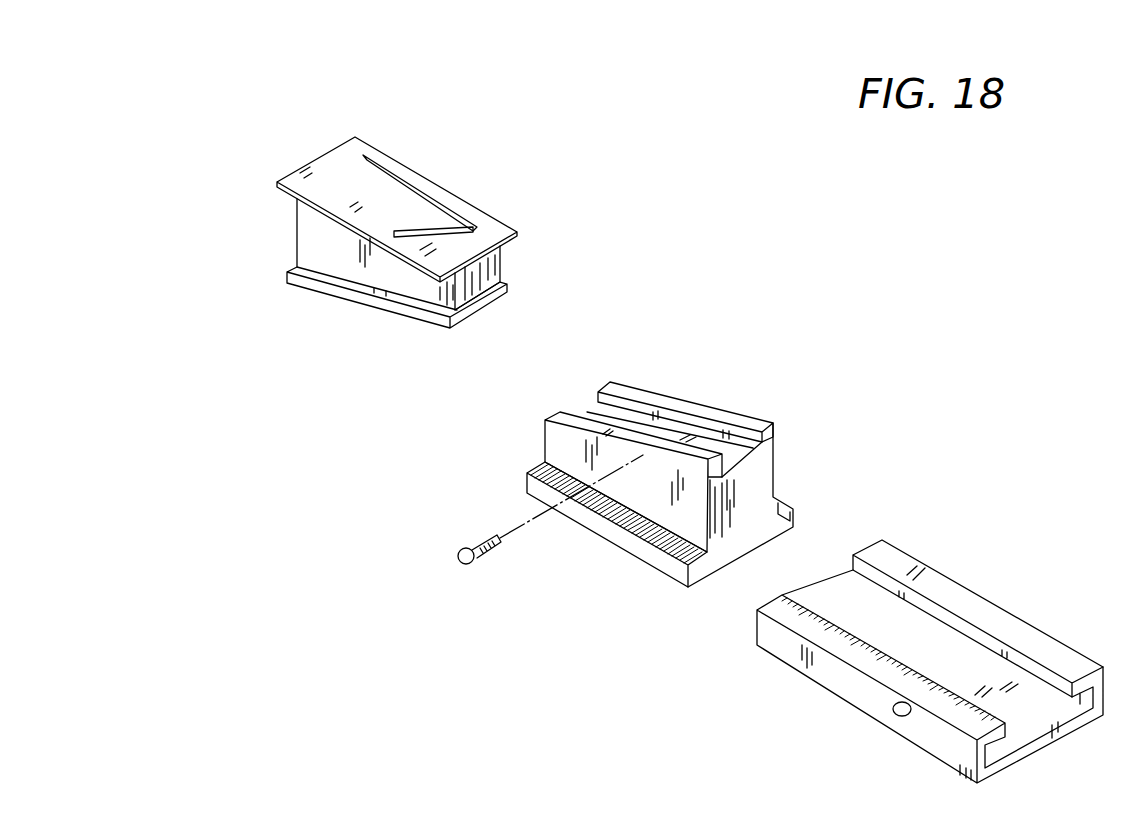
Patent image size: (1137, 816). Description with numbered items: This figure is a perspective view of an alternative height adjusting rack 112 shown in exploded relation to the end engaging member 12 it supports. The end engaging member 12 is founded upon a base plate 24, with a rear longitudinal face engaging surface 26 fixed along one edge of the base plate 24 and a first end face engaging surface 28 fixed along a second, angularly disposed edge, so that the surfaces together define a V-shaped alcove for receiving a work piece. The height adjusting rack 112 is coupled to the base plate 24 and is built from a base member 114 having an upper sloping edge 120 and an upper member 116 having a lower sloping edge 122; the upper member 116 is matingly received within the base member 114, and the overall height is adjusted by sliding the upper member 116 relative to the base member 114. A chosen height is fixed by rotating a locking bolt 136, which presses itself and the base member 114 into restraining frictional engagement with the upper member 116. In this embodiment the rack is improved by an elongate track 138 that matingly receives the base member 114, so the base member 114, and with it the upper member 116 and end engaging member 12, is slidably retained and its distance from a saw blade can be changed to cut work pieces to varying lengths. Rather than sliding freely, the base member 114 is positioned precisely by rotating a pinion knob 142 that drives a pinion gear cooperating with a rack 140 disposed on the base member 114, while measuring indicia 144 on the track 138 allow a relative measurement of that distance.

The end engaging member 12 is at (315, 132).
The base plate 24 is at (497, 230).
The rear longitudinal face engaging surface 26 is at (433, 197).
The first end face engaging surface 28 is at (395, 232).
The upper member 116 is at (303, 225).
The lower sloping edge 122 is at (330, 296).
The height adjusting rack 112 is at (640, 230).
The base member 114 is at (758, 483).
The upper sloping edge 120 is at (668, 400).
The locking bolt 136 is at (458, 562).
The rack 140 is at (628, 525).
The elongate track 138 is at (958, 585).
The pinion knob 142 is at (898, 717).
The measuring indicia 144 is at (822, 608).